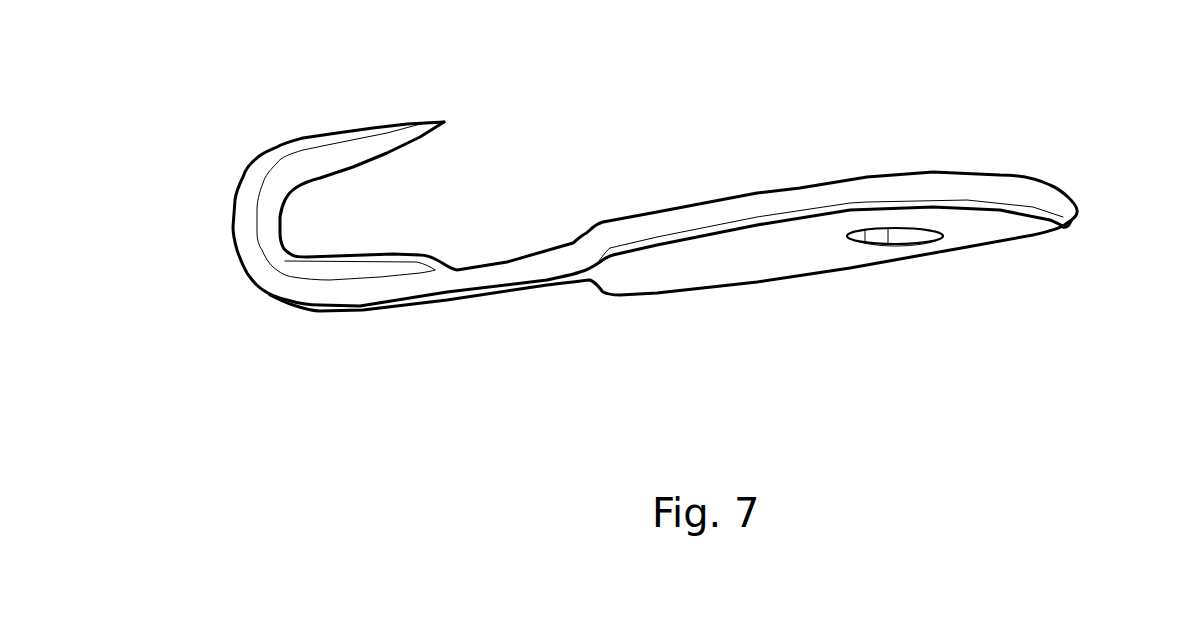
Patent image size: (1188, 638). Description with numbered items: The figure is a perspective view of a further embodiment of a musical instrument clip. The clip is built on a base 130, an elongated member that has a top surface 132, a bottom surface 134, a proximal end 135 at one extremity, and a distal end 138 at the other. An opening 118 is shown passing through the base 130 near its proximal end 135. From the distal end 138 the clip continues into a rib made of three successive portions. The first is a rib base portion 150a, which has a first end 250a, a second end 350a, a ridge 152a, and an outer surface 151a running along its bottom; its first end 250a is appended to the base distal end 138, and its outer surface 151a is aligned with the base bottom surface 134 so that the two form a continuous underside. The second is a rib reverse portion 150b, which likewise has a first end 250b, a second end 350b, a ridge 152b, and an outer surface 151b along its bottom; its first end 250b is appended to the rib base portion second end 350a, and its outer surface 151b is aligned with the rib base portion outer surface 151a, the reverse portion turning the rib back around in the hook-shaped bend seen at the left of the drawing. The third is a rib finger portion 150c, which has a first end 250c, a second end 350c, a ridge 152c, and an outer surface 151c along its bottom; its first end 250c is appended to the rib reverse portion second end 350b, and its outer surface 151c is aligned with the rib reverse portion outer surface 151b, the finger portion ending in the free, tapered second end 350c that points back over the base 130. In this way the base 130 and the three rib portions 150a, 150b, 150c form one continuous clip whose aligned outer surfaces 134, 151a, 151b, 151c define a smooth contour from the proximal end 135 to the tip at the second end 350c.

The aperture 118 is at (907, 233).
The base 130 is at (1065, 268).
The top surface 132 is at (766, 192).
The bottom surface 134 is at (785, 270).
The proximal end 135 is at (1090, 198).
The distal end 138 is at (550, 313).
The rib base portion 150a is at (520, 315).
The rib reverse portion 150b is at (208, 165).
The rib finger portion 150c is at (445, 105).
The outer surface 151a is at (360, 300).
The outer surface 151b is at (240, 257).
The outer surface 151c is at (313, 135).
The ridge 152a is at (393, 257).
The ridge 152b is at (278, 217).
The ridge 152c is at (395, 150).
The first end 250a is at (530, 238).
The first end 250b is at (260, 312).
The first end 250c is at (264, 148).
The second end 350a is at (283, 315).
The second end 350b is at (253, 160).
The second end 350c is at (437, 106).